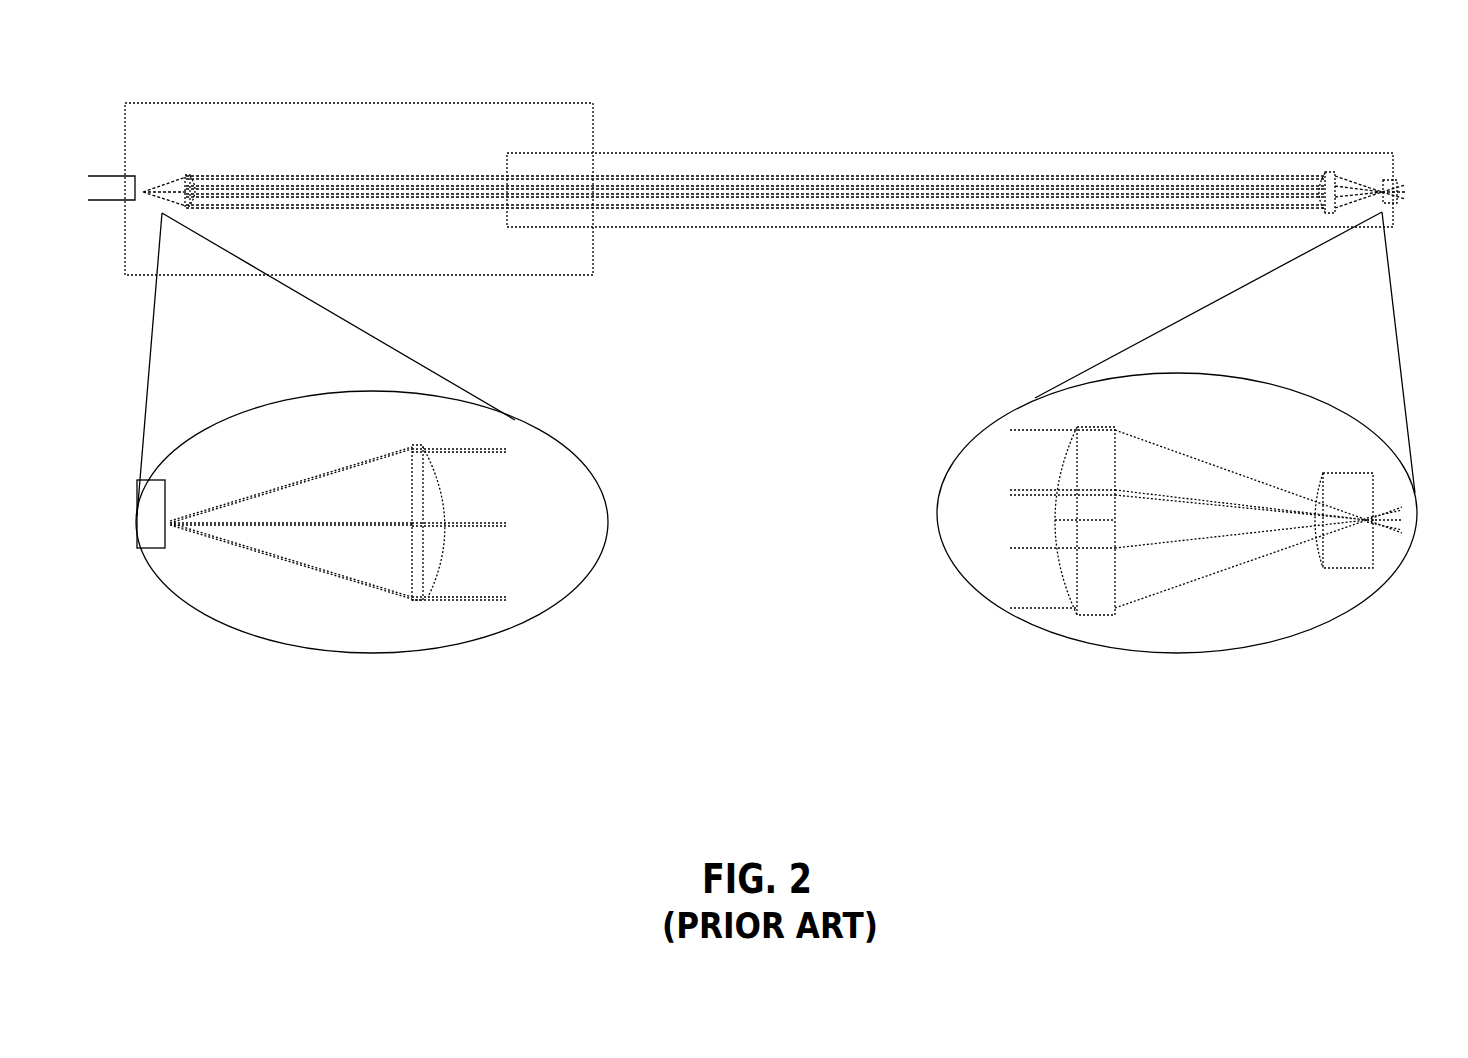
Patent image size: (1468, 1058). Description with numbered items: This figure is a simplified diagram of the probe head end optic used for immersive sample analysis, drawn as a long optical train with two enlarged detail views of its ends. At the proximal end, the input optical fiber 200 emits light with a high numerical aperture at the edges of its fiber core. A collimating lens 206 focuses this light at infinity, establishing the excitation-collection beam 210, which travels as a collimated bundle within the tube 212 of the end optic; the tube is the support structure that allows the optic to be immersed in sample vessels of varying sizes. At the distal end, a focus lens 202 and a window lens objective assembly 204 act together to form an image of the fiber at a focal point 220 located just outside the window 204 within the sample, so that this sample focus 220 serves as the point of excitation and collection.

The input optical fiber 200 is at (104, 176).
The focus lens 202 is at (1330, 172).
The window lens objective assembly 204 is at (1395, 182).
The collimating lens 206 is at (186, 194).
The excitation-collection beam 210 is at (927, 223).
The tube 212 is at (1009, 151).
The focal point 220 is at (1390, 550).